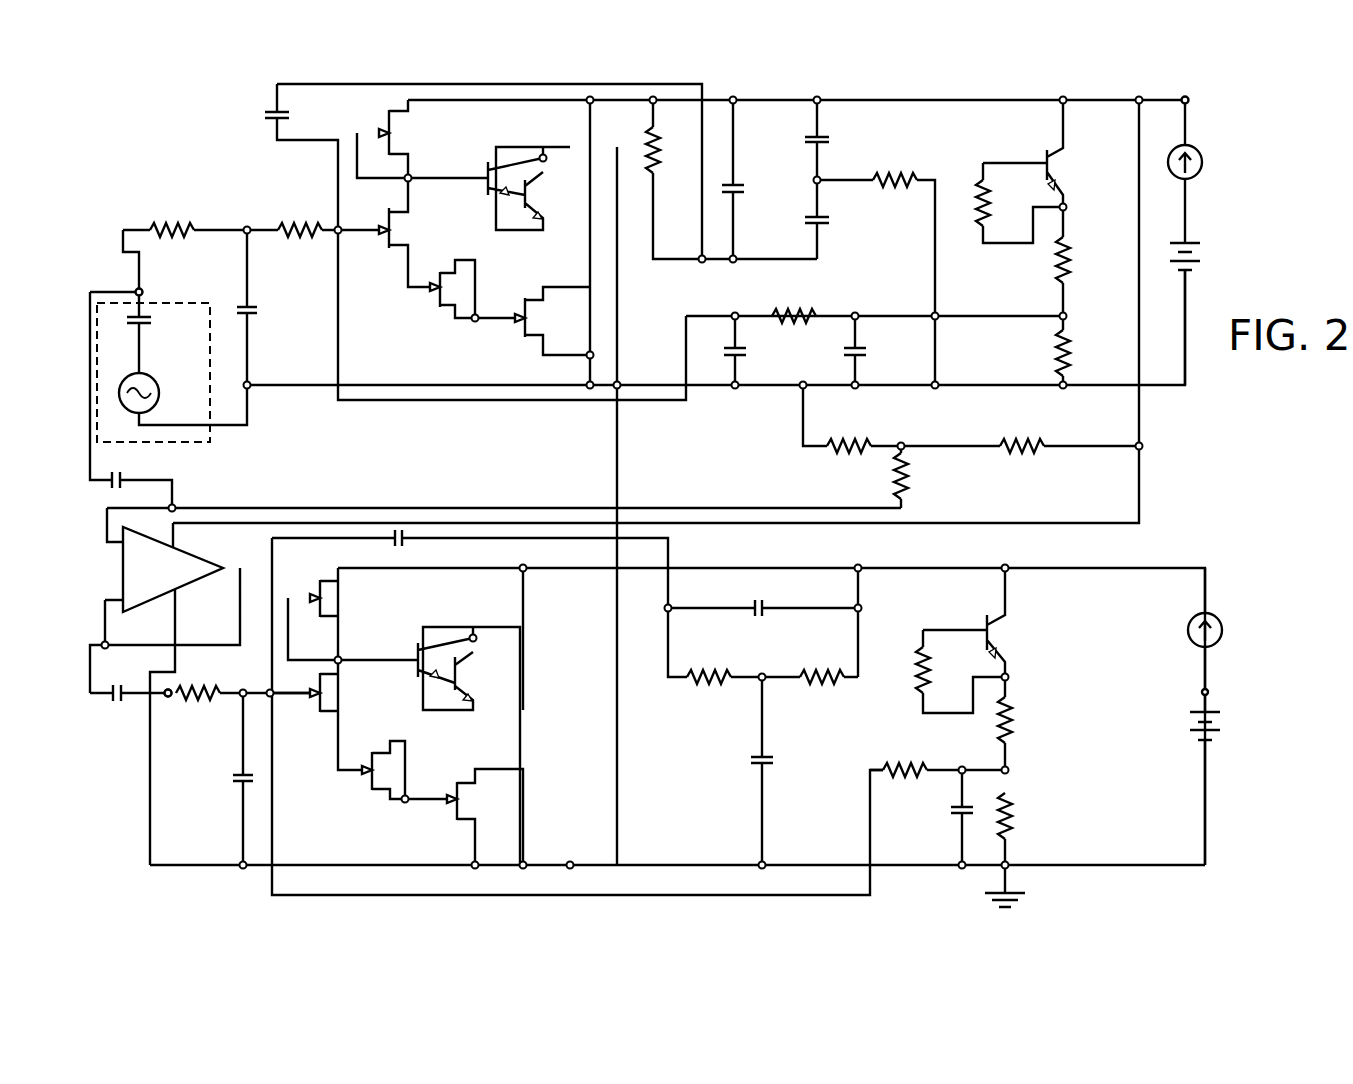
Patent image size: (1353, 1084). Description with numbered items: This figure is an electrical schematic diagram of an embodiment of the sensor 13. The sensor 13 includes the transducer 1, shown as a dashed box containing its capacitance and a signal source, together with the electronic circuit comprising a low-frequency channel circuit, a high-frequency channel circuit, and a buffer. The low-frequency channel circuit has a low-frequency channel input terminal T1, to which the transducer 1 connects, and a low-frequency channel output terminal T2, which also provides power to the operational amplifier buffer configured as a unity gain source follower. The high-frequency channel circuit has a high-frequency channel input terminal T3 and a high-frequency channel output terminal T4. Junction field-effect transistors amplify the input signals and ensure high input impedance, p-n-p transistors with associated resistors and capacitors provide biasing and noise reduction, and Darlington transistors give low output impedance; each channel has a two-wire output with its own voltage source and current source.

The transducer 1 is at (210, 412).
The sensor 13 is at (688, 500).
The low-frequency channel input terminal T1 is at (139, 292).
The low-frequency channel output terminal T2 is at (1188, 100).
The high-frequency channel input terminal T3 is at (168, 693).
The high-frequency channel output terminal T4 is at (1205, 568).